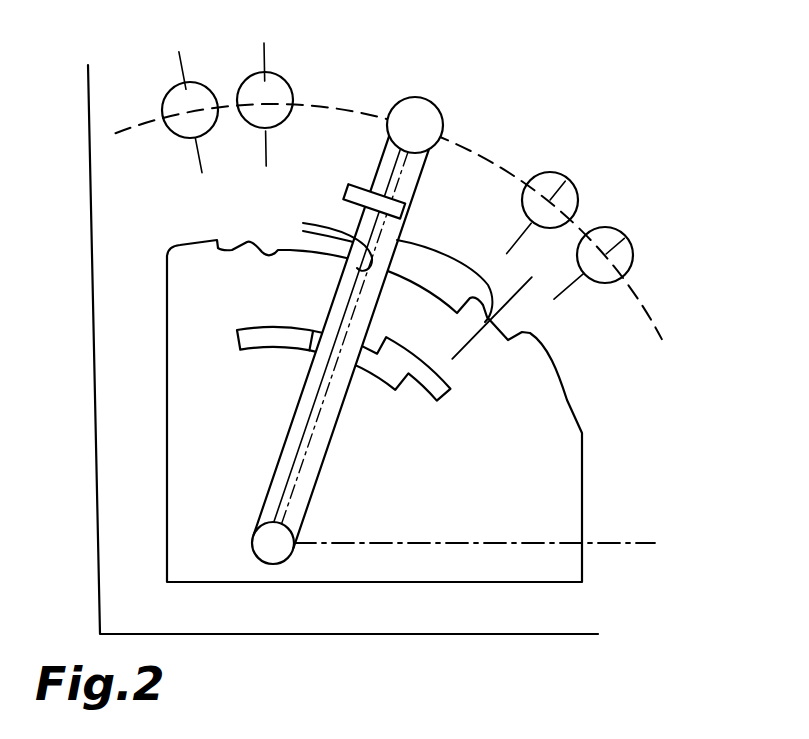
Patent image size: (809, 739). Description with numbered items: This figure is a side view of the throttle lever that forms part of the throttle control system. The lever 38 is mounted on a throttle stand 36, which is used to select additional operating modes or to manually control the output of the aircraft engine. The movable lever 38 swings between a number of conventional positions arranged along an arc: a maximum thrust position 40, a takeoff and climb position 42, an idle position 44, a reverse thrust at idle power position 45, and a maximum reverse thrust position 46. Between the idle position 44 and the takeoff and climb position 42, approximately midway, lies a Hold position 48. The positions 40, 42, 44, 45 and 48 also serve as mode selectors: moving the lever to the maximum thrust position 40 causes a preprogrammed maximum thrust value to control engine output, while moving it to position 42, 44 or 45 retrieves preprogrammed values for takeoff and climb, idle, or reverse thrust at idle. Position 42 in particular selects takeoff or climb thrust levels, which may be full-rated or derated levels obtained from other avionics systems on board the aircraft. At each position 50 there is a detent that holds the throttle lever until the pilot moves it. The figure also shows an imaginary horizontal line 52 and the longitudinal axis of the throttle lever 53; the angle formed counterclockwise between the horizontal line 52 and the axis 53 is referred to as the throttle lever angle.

The throttle stand 36 is at (388, 633).
The lever 38 is at (438, 106).
The maximum thrust position 40 is at (178, 76).
The takeoff and climb position 42 is at (268, 58).
The idle position 44 is at (579, 197).
The reverse thrust at idle power position 45 is at (521, 297).
The maximum reverse thrust position 46 is at (627, 235).
The Hold position 48 is at (428, 97).
The position detent 50 is at (303, 224).
The imaginary horizontal line 52 is at (628, 538).
The longitudinal axis of the throttle lever 53 is at (321, 452).